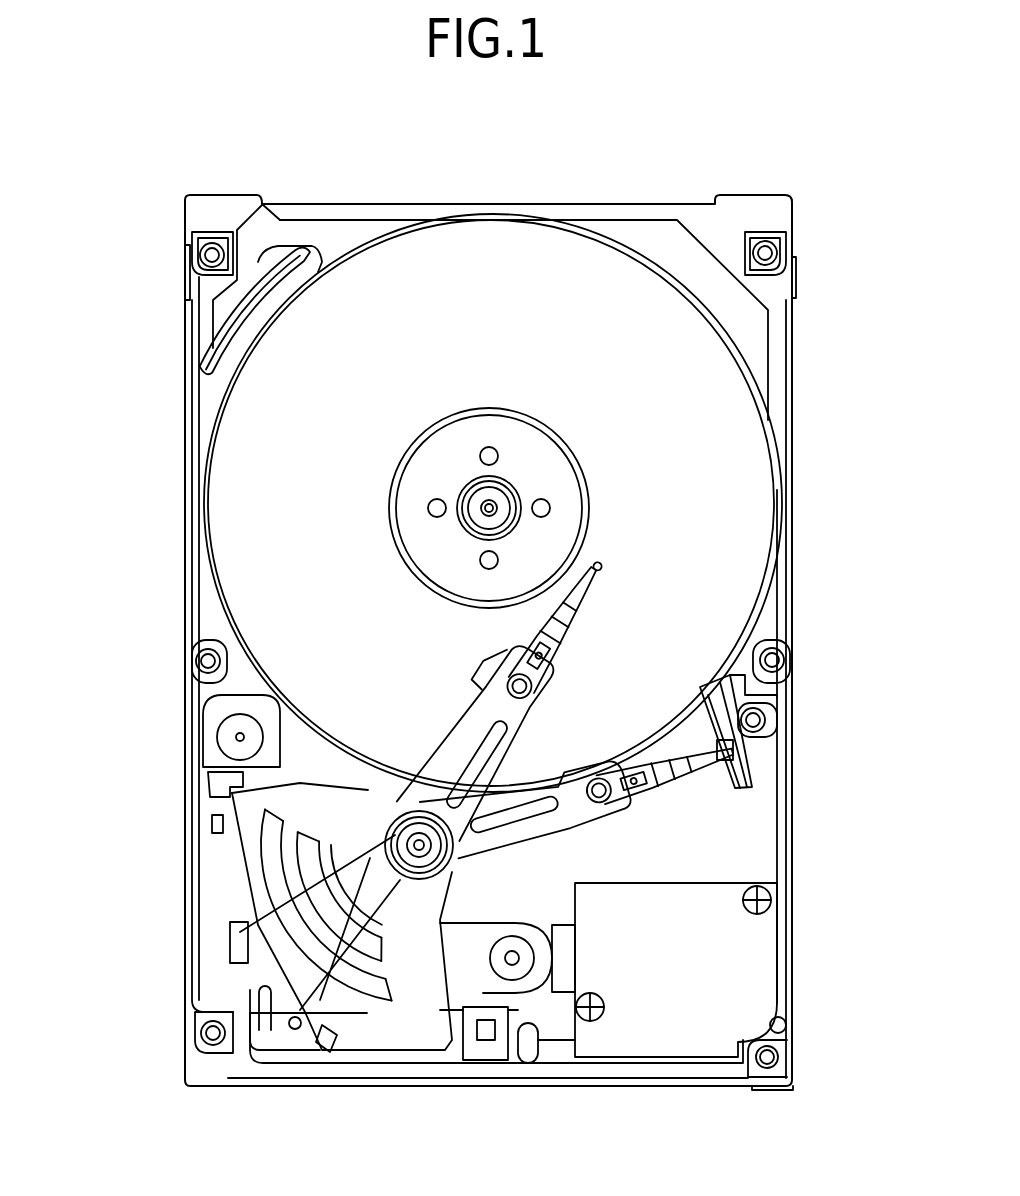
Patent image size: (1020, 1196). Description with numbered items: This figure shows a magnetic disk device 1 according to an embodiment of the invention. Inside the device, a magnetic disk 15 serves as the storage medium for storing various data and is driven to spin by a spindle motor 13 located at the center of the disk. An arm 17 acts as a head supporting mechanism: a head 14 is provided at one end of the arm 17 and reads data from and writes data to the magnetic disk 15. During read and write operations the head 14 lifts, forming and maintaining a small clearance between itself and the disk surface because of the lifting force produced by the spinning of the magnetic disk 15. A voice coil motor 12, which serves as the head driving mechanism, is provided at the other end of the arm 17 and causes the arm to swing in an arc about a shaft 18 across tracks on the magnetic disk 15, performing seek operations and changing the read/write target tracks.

The magnetic disk device 1 is at (818, 143).
The voice coil motor 12 is at (399, 1010).
The spindle motor 13 is at (460, 495).
The head 14 is at (597, 585).
The magnetic disk 15 is at (607, 262).
The arm 17 is at (463, 750).
The shaft 18 is at (407, 843).